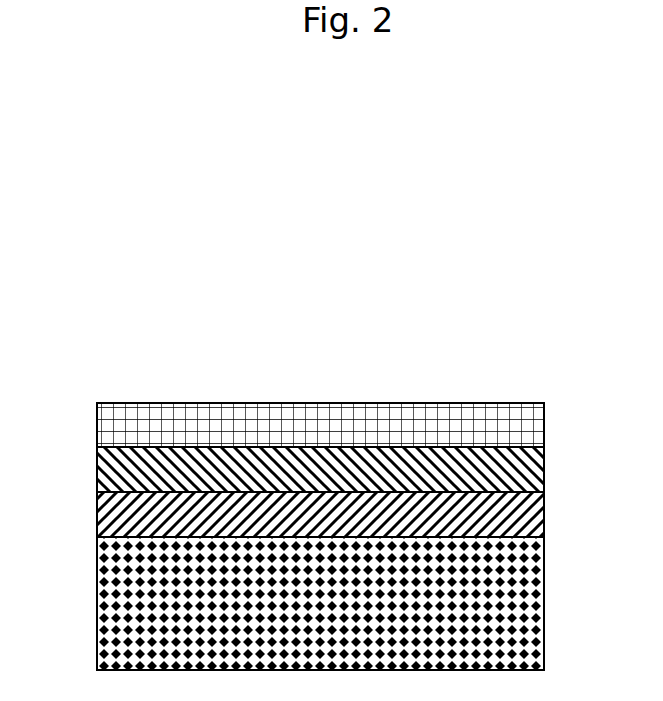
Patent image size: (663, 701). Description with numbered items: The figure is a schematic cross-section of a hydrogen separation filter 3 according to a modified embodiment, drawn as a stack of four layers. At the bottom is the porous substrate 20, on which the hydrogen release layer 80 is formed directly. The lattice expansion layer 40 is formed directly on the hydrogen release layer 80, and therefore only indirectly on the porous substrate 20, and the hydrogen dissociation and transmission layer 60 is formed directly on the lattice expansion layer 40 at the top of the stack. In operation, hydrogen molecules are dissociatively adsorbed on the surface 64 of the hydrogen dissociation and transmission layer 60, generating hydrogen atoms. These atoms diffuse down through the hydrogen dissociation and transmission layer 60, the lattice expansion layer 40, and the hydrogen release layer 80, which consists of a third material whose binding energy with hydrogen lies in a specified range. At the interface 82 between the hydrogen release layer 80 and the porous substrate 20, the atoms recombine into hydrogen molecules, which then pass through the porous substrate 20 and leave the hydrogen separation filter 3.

The hydrogen separation filter 3 is at (521, 327).
The porous substrate 20 is at (533, 605).
The lattice expansion layer 40 is at (534, 471).
The hydrogen dissociation and transmission layer 60 is at (534, 427).
The surface of the hydrogen dissociation and transmission layer 64 is at (117, 403).
The hydrogen release layer 80 is at (534, 516).
The interface between the porous substrate and the hydrogen release layer 82 is at (120, 543).